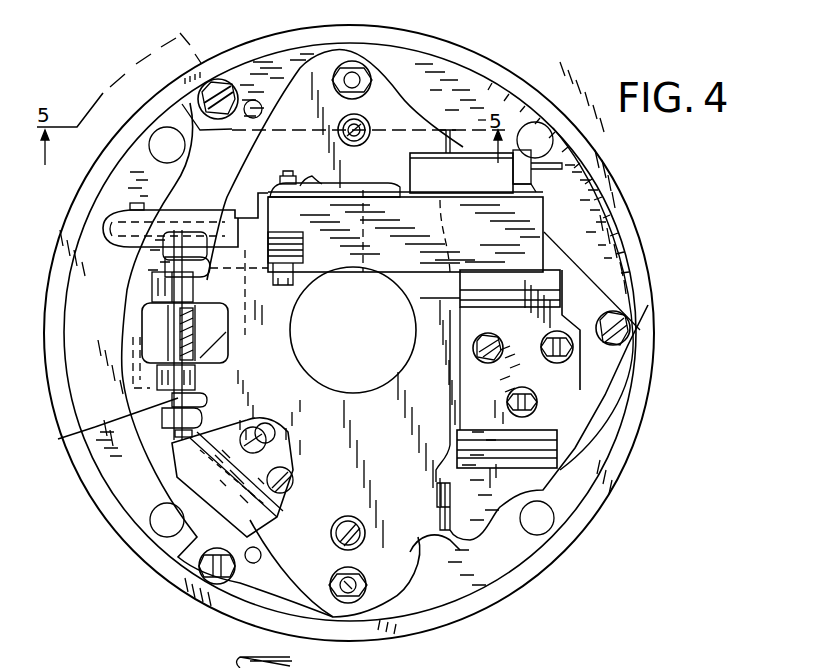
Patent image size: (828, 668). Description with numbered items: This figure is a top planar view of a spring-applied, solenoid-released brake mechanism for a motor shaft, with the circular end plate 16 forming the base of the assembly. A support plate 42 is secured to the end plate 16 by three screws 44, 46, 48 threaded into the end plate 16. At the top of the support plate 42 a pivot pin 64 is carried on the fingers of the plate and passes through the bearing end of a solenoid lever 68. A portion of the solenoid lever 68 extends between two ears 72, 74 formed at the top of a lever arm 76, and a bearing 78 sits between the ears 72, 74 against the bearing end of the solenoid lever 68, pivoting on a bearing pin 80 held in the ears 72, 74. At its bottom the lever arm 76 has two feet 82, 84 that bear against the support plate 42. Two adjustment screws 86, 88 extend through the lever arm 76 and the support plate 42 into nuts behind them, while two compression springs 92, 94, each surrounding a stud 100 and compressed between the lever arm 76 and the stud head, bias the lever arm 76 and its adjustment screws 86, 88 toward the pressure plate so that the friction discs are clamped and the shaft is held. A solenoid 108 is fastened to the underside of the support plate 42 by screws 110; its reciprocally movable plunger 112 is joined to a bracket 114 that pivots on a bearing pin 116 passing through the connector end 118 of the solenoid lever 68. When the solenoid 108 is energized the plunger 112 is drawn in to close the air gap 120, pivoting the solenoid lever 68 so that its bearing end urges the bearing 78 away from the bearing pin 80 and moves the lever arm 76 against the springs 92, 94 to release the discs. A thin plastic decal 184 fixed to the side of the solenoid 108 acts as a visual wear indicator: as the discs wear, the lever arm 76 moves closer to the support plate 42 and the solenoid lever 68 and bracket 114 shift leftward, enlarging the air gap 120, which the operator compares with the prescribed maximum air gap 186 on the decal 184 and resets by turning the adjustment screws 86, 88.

The end plate 16 is at (577, 171).
The support plate 42 is at (497, 350).
The screw 44 is at (200, 582).
The screw 46 is at (222, 95).
The screw 48 is at (622, 332).
The pivot pin 64 is at (197, 431).
The solenoid lever 68 is at (163, 307).
The ear 72 is at (187, 379).
The ear 74 is at (195, 292).
The lever arm 76 is at (478, 592).
The bearing 78 is at (140, 340).
The bearing pin 80 is at (102, 425).
The foot 82 is at (450, 513).
The foot 84 is at (447, 133).
The adjustment screw 86 is at (347, 523).
The adjustment screw 88 is at (356, 127).
The compression spring 92 is at (372, 70).
The compression spring 94 is at (348, 598).
The stud 100 is at (337, 72).
The solenoid 108 is at (527, 217).
The screws 110 is at (532, 404).
The plunger 112 is at (256, 210).
The bracket 114 is at (246, 292).
The bearing pin 116 is at (140, 370).
The connector end 118 is at (123, 320).
The air gap 120 is at (353, 330).
The decal 184 is at (390, 207).
The maximum air gap 186 is at (320, 188).